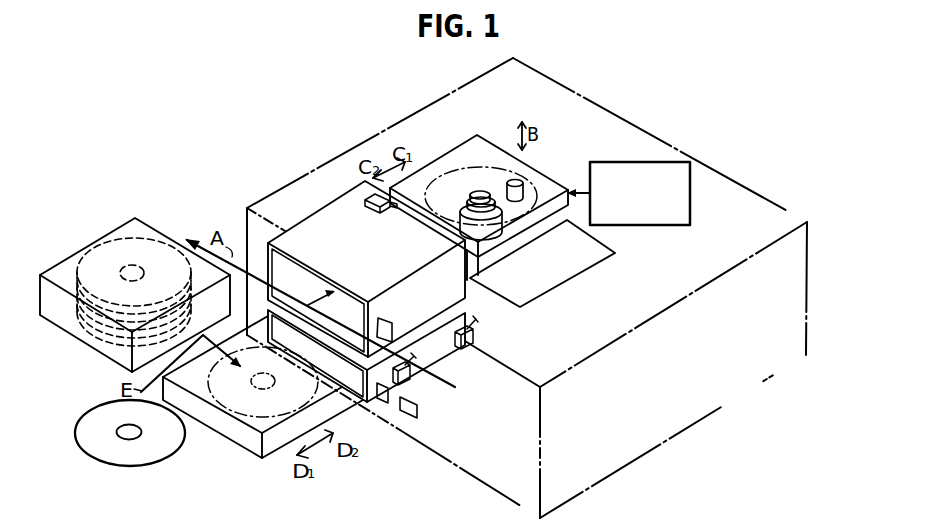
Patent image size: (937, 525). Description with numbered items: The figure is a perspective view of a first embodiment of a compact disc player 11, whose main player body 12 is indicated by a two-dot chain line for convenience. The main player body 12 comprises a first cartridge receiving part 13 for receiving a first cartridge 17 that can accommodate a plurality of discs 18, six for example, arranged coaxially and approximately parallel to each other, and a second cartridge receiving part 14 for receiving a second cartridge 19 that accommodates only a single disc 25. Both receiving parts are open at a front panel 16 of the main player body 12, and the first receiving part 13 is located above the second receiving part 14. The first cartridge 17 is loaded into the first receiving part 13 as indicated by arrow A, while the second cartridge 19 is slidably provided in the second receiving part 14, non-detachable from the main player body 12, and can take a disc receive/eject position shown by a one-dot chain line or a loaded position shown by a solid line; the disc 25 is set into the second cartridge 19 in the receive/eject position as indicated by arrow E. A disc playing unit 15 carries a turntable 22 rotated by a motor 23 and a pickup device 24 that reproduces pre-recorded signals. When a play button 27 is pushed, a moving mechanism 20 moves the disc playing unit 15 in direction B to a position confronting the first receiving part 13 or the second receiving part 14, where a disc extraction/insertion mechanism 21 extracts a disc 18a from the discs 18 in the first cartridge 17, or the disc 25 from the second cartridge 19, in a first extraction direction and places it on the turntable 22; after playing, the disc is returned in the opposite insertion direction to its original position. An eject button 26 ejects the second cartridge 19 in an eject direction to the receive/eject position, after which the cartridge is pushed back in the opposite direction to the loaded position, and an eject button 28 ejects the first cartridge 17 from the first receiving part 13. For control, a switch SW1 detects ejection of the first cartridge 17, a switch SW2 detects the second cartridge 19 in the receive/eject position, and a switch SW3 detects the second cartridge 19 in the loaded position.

The compact disc player 11 is at (601, 89).
The main player body 12 is at (640, 127).
The first cartridge receiving part 13 is at (310, 213).
The second cartridge receiving part 14 is at (427, 358).
The disc playing unit 15 is at (463, 140).
The front panel 16 is at (473, 478).
The first cartridge 17 is at (141, 228).
The discs 18 is at (118, 238).
The disc 18a is at (442, 177).
The second cartridge 19 is at (230, 437).
The moving mechanism 20 is at (691, 214).
The disc extraction/insertion mechanism 21 is at (570, 280).
The turntable 22 is at (481, 191).
The motor 23 is at (448, 222).
The pickup device 24 is at (521, 183).
The disc 25 is at (137, 463).
The eject button 26 is at (383, 402).
The play button 27 is at (408, 417).
The eject button 28 is at (395, 330).
The switch SW1 is at (370, 208).
The switch SW2 is at (410, 381).
The switch SW3 is at (478, 328).